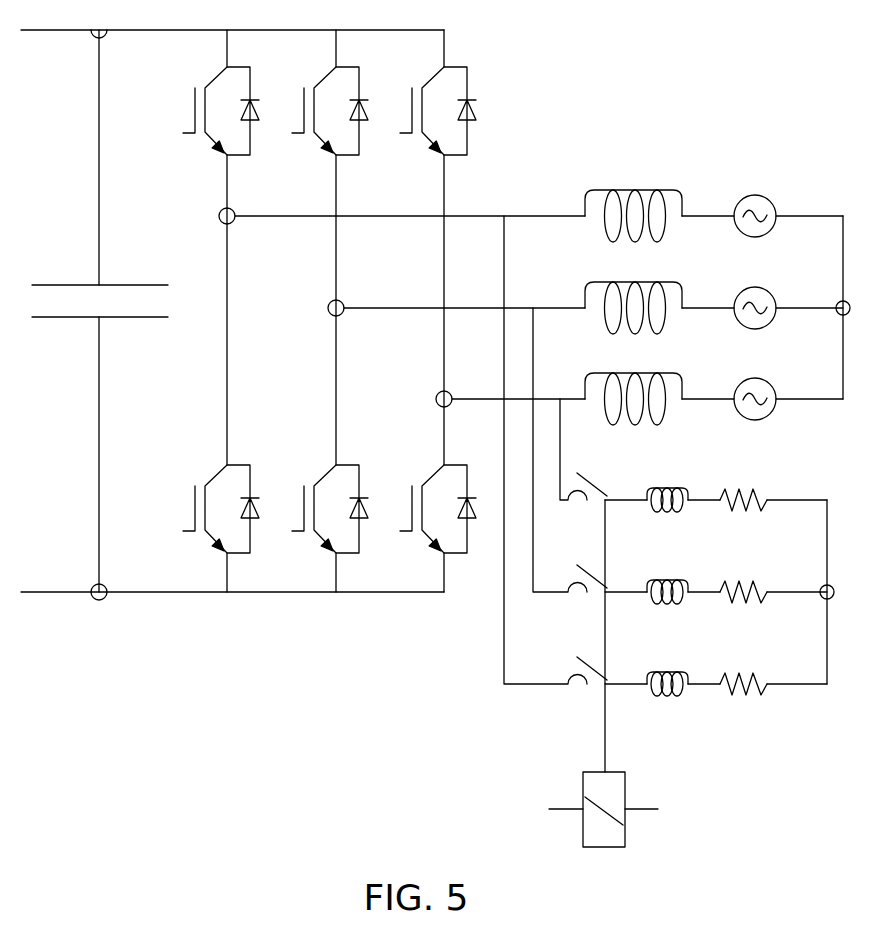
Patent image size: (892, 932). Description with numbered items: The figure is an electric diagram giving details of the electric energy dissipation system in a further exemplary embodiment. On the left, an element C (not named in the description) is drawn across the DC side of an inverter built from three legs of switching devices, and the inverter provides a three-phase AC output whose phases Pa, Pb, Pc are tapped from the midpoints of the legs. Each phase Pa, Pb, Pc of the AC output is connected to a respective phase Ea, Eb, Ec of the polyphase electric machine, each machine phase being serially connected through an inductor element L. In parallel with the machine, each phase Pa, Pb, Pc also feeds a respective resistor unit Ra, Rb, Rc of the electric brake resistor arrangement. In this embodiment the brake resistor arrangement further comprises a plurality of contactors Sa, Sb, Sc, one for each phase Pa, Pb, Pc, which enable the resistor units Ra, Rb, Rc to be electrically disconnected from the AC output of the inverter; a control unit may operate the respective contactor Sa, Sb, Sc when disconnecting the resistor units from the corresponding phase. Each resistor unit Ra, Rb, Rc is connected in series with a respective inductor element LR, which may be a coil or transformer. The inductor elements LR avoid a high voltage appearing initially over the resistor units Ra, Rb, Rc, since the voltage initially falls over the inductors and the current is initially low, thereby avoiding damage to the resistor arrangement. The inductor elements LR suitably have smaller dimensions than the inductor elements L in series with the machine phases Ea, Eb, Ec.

The smoothing capacitor C is at (100, 281).
The phase of the AC output of the inverter Pa is at (286, 217).
The phase of the AC output of the inverter Pb is at (394, 309).
The phase of the AC output of the inverter Pc is at (485, 400).
The inductor element L is at (633, 322).
The phase of the electric machine Ea is at (762, 236).
The phase of the electric machine Eb is at (762, 327).
The phase of the electric machine Ec is at (762, 419).
The contactor Sa is at (588, 661).
The contactor Sb is at (590, 572).
The contactor Sc is at (602, 484).
The inductor element LR is at (667, 609).
The resistor unit Ra is at (773, 702).
The resistor unit Rb is at (773, 610).
The resistor unit Rc is at (773, 518).